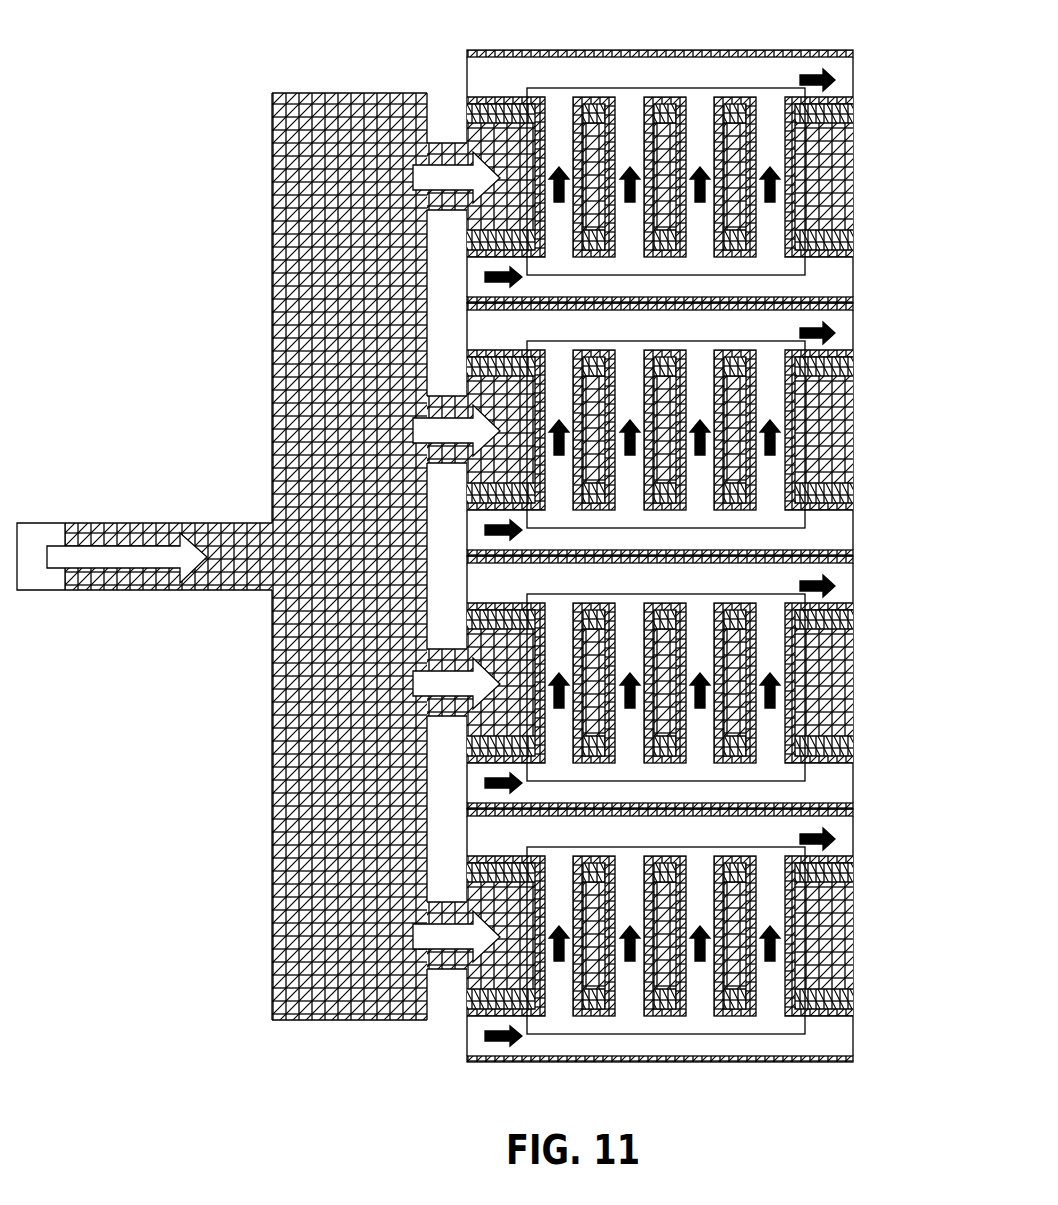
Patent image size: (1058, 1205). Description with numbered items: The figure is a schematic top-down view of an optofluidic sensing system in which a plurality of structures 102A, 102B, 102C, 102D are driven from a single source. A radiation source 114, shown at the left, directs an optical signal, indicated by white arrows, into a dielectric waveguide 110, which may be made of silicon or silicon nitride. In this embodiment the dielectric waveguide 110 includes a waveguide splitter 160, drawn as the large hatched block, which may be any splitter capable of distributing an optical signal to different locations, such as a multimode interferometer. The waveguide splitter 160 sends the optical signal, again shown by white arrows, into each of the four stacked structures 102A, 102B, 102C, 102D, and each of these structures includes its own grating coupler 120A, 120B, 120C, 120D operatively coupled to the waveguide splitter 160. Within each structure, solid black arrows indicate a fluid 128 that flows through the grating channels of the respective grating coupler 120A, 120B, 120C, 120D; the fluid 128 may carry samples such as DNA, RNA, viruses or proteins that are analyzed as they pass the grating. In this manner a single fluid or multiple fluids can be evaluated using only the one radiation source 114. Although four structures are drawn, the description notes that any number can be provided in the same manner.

The dielectric waveguide 110 is at (320, 525).
The waveguide splitter 160 is at (314, 245).
The radiation source 114 is at (35, 553).
The fluid 128 is at (496, 1076).
The structure 102A is at (674, 155).
The structure 102B is at (673, 429).
The structure 102C is at (673, 682).
The structure 102D is at (673, 967).
The grating coupler 120A is at (672, 38).
The grating coupler 120B is at (699, 442).
The grating coupler 120C is at (699, 695).
The grating coupler 120D is at (699, 948).